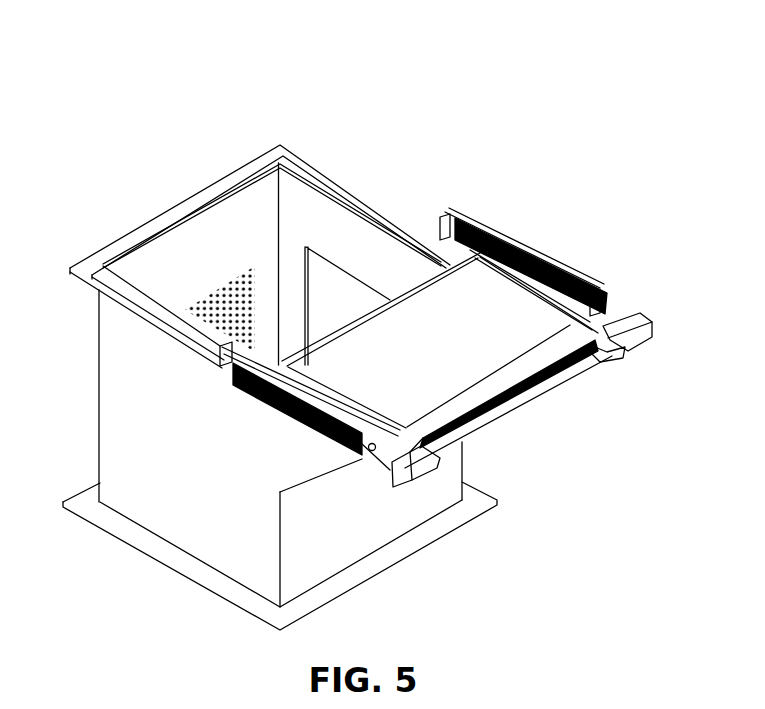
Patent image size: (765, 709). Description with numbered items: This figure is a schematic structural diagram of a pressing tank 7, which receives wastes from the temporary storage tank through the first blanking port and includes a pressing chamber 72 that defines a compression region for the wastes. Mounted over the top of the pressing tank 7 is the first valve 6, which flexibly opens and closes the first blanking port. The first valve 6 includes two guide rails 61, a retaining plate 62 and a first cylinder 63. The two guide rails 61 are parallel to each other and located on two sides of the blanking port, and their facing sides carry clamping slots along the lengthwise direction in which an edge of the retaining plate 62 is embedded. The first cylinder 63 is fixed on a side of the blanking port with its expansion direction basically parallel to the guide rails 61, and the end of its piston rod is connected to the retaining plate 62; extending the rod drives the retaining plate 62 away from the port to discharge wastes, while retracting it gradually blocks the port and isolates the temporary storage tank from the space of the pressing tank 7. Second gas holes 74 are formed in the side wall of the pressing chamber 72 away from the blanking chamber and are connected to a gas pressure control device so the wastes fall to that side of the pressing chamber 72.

The first valve 6 is at (682, 110).
The guide rails 61 is at (568, 305).
The retaining plate 62 is at (465, 303).
The first cylinder 63 is at (537, 252).
The pressing tank 7 is at (253, 522).
The pressing chamber 72 is at (287, 340).
The second gas holes 74 is at (233, 286).